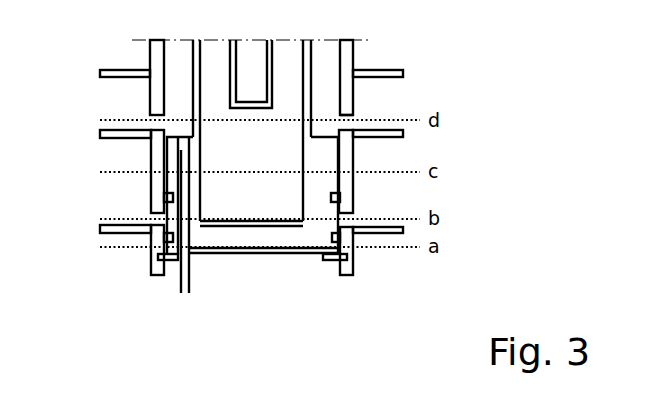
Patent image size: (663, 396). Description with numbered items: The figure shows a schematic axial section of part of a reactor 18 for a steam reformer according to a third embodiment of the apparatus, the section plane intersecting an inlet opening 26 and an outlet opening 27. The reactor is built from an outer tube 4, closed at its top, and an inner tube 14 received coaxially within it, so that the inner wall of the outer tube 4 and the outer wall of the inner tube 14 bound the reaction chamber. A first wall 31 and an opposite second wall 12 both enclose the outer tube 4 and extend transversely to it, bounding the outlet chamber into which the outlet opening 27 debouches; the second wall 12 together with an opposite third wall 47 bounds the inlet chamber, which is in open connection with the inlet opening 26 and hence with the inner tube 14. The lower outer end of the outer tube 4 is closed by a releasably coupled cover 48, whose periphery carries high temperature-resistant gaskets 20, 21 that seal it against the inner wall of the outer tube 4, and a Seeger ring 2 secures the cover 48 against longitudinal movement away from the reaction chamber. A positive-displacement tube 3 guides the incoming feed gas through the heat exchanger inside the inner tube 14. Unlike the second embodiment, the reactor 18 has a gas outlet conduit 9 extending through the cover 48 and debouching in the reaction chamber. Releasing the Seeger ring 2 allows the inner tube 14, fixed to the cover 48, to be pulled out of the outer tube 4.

The Seeger ring 2 is at (166, 262).
The positive-displacement tube 3 is at (234, 46).
The outer tube 4 is at (348, 47).
The gas outlet conduit 9 is at (190, 278).
The second wall 12 is at (358, 133).
The inner tube 14 is at (306, 42).
The reactor 18 is at (122, 306).
The gasket 20 is at (163, 241).
The gasket 21 is at (173, 201).
The inlet opening 26 is at (352, 215).
The outlet opening 27 is at (352, 117).
The first wall 31 is at (390, 72).
The third wall 47 is at (400, 232).
The cover 48 is at (173, 178).